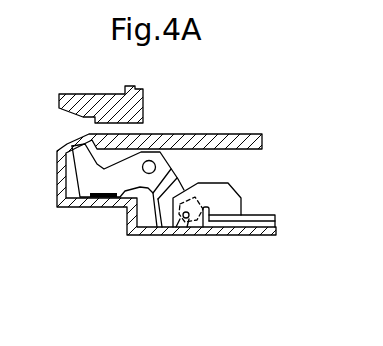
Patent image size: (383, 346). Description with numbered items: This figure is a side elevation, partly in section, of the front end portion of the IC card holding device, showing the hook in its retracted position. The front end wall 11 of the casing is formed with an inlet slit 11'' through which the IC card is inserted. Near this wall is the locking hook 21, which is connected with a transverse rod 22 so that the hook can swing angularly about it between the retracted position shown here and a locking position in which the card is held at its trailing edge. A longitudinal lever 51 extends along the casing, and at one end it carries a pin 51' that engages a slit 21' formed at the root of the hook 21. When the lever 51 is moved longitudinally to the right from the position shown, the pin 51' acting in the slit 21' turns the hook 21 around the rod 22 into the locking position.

The front end wall 11 is at (146, 184).
The inlet slit 11'' is at (79, 104).
The locking hook 21 is at (128, 197).
The slit 21' is at (180, 250).
The transverse rod 22 is at (149, 173).
The longitudinal lever 51 is at (224, 230).
The pin 51' is at (200, 258).